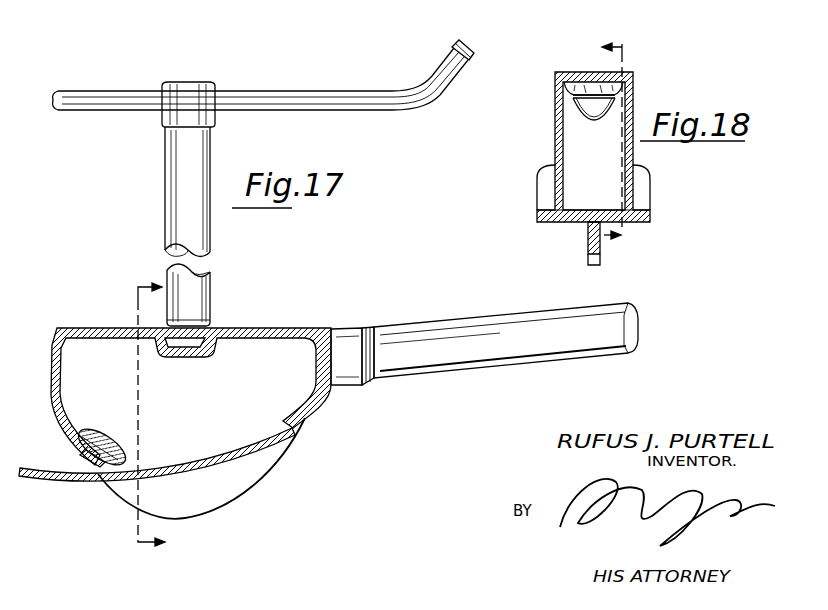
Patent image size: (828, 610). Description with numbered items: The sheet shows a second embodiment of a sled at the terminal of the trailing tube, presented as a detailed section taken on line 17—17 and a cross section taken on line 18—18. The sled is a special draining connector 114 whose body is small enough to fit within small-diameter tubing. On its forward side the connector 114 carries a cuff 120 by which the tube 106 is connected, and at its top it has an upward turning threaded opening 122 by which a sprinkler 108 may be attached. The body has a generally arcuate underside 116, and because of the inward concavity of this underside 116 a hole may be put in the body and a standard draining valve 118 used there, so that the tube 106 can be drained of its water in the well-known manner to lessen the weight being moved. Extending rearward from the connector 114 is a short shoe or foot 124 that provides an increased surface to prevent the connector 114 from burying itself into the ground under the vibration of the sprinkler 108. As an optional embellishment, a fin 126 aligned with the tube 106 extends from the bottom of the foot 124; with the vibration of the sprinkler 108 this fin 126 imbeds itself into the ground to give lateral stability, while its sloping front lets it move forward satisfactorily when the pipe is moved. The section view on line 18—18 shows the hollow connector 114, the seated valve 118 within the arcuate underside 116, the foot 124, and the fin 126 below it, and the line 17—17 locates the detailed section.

In FIG. 17, the tube 106 is at (522, 326).
In FIG. 17, the sprinkler 108 is at (376, 101).
In FIG. 17, the draining connector 114 is at (303, 426).
In FIG. 18, the draining connector 114 is at (553, 117).
In FIG. 17, the arcuate underside 116 is at (80, 451).
In FIG. 17, the draining valve 118 is at (100, 433).
In FIG. 17, the cuff 120 is at (345, 372).
In FIG. 17, the threaded opening 122 is at (215, 324).
In FIG. 17, the foot 124 is at (92, 478).
In FIG. 18, the foot 124 is at (536, 217).
In FIG. 17, the fin 126 is at (258, 474).
In FIG. 18, the fin 126 is at (598, 249).
In FIG. 18, the section line 17— 17 is at (629, 145).
In FIG. 17, the section line 18— 18 is at (135, 421).